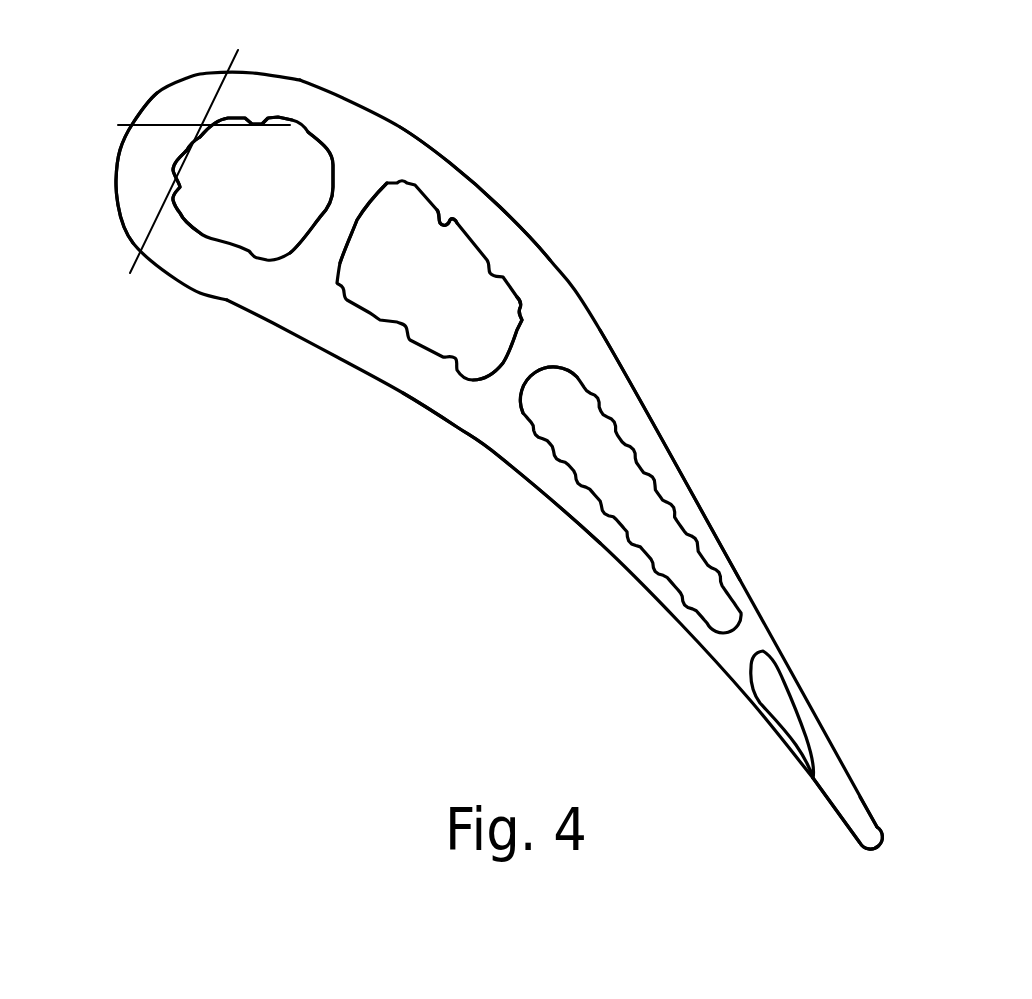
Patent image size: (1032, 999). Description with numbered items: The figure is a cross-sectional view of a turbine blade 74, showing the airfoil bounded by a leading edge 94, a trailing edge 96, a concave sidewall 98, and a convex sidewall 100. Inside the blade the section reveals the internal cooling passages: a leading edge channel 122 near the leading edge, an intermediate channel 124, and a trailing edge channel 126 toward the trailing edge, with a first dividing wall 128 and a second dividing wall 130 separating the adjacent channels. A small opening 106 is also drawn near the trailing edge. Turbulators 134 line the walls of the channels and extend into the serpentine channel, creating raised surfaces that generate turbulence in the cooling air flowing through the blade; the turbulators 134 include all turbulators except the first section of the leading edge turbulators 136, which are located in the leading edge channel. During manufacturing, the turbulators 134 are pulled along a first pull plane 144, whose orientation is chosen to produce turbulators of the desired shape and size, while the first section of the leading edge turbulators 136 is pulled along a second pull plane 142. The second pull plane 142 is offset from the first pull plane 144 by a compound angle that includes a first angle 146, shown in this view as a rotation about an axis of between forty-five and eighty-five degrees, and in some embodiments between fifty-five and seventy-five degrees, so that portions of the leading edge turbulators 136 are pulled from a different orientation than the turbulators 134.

The turbine blade 74 is at (698, 129).
The leading edge 94 is at (131, 137).
The trailing edge 96 is at (871, 845).
The concave sidewall 98 is at (503, 467).
The convex sidewall 100 is at (613, 347).
The trailing edge cooling slot 106 is at (813, 778).
The leading edge channel 122 is at (240, 240).
The intermediate channel 124 is at (373, 305).
The trailing edge channel 126 is at (624, 524).
The first dividing wall 128 is at (330, 233).
The second dividing wall 130 is at (517, 370).
The turbulators 134 is at (600, 325).
The leading edge turbulators 136 is at (197, 135).
The second pull plane 142 is at (165, 127).
The first pull plane 144 is at (155, 222).
The first angle 146 is at (218, 112).